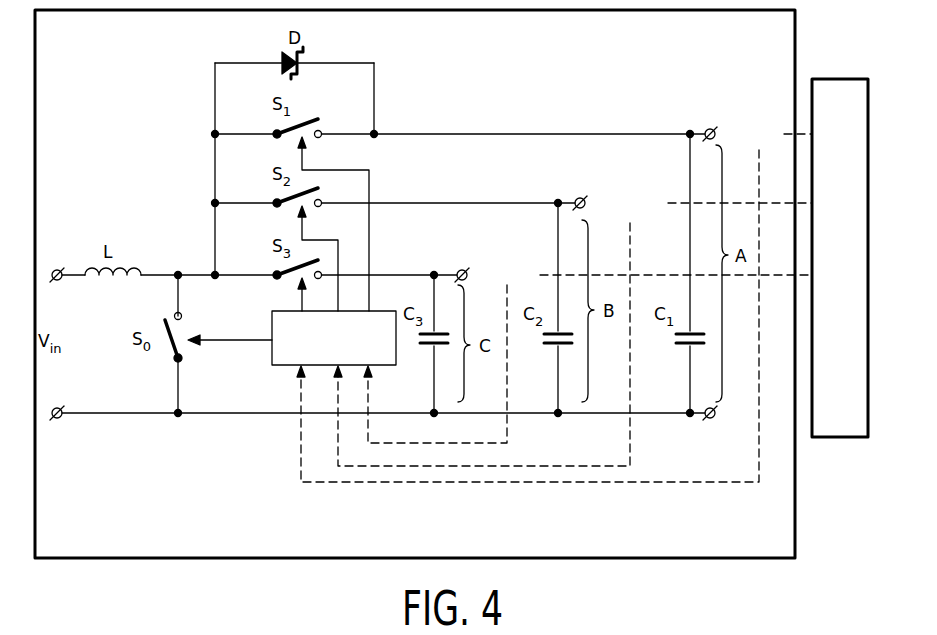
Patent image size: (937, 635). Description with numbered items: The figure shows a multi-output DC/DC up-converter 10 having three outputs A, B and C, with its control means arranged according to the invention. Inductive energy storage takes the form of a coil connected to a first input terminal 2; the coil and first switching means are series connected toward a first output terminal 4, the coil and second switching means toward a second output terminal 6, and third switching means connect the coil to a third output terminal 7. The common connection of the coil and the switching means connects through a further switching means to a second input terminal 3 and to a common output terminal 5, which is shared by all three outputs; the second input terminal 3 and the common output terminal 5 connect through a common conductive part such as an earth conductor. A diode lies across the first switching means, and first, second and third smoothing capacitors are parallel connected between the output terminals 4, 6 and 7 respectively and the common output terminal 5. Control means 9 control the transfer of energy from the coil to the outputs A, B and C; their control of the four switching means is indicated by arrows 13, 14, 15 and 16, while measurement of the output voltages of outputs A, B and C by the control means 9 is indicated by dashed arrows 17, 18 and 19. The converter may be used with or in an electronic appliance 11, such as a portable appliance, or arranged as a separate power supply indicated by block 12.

The first input terminal 2 is at (56, 268).
The second input terminal 3 is at (57, 425).
The first output terminal 4 is at (712, 126).
The common output terminal 5 is at (714, 420).
The second output terminal 6 is at (583, 196).
The third output terminal 7 is at (461, 268).
The control means 9 is at (271, 366).
The multi-output DC/DC up-converter 10 is at (483, 97).
The electronic appliance 11 is at (841, 88).
The block 12 is at (749, 548).
The arrow 13 is at (215, 336).
The arrow 14 is at (362, 166).
The arrow 15 is at (335, 240).
The arrow 16 is at (301, 299).
The dashed arrow 17 is at (697, 482).
The dashed arrow 18 is at (578, 466).
The dashed arrow 19 is at (385, 443).